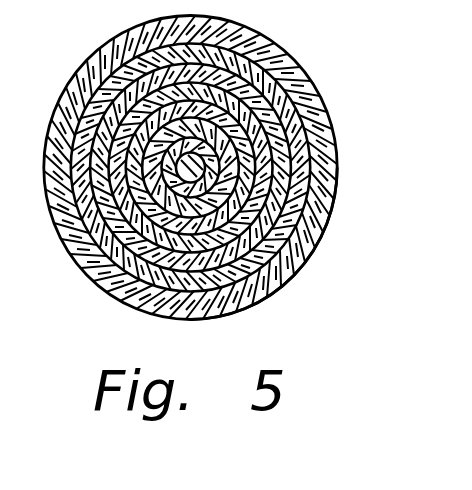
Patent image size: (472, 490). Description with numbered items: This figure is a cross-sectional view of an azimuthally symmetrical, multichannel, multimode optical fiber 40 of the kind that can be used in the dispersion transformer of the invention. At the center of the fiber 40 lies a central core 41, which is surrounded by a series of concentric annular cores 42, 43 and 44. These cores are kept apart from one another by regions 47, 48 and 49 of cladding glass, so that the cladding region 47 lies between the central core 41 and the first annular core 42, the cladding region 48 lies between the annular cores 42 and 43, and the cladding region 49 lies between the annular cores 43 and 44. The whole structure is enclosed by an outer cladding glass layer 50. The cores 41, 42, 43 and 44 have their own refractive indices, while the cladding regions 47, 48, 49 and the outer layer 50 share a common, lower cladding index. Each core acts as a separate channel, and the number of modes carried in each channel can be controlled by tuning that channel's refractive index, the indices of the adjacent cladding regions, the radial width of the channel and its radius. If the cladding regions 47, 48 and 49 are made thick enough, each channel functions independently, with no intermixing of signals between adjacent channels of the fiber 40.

The multi-channel optical fiber 40 is at (306, 52).
The central core 41 is at (203, 160).
The annular core 42 is at (243, 153).
The annular core 43 is at (272, 173).
The annular core 44 is at (298, 207).
The cladding glass region 47 is at (235, 192).
The cladding glass region 48 is at (225, 215).
The cladding glass region 49 is at (260, 275).
The outer cladding glass layer 50 is at (222, 316).